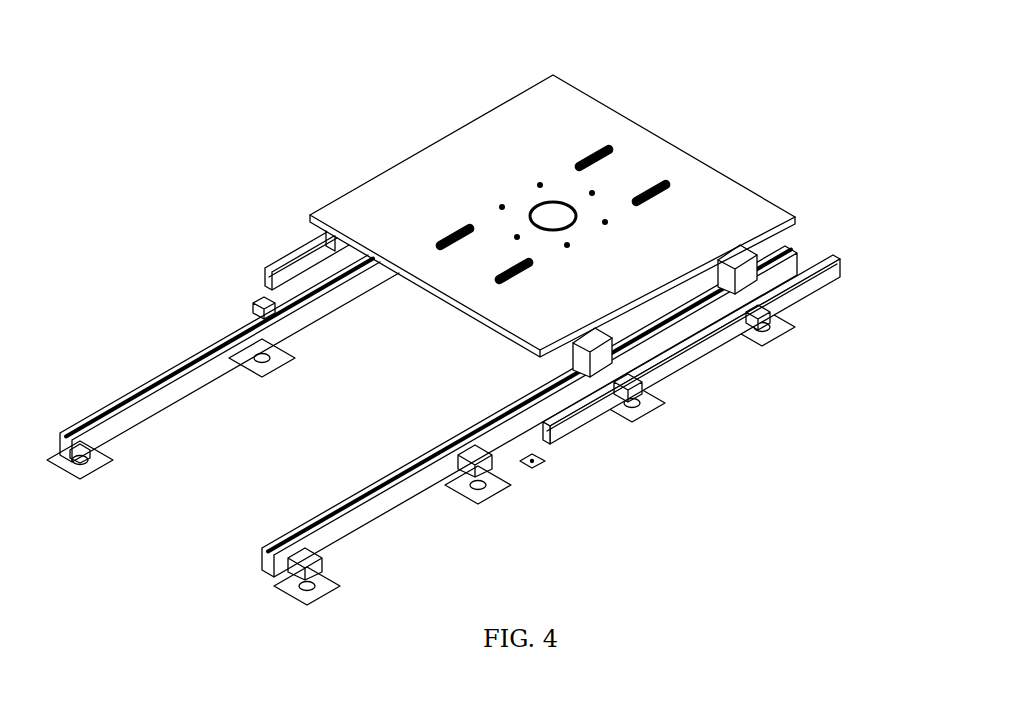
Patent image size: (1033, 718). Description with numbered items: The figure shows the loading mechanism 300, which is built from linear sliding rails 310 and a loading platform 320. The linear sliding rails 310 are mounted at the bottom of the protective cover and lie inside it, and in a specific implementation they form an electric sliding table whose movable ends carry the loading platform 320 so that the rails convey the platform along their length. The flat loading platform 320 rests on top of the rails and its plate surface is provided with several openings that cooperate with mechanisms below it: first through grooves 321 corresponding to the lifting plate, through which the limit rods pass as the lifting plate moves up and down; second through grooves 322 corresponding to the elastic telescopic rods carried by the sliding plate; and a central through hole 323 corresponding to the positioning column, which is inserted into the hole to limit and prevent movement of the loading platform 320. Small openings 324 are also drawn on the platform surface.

The loading mechanism 300 is at (502, 319).
The linear sliding rails 310 is at (785, 293).
The loading platform 320 is at (601, 195).
The first through grooves 321 is at (670, 183).
The second through grooves 322 is at (440, 243).
The through hole 323 is at (553, 203).
The small mounting hole 324 is at (605, 220).